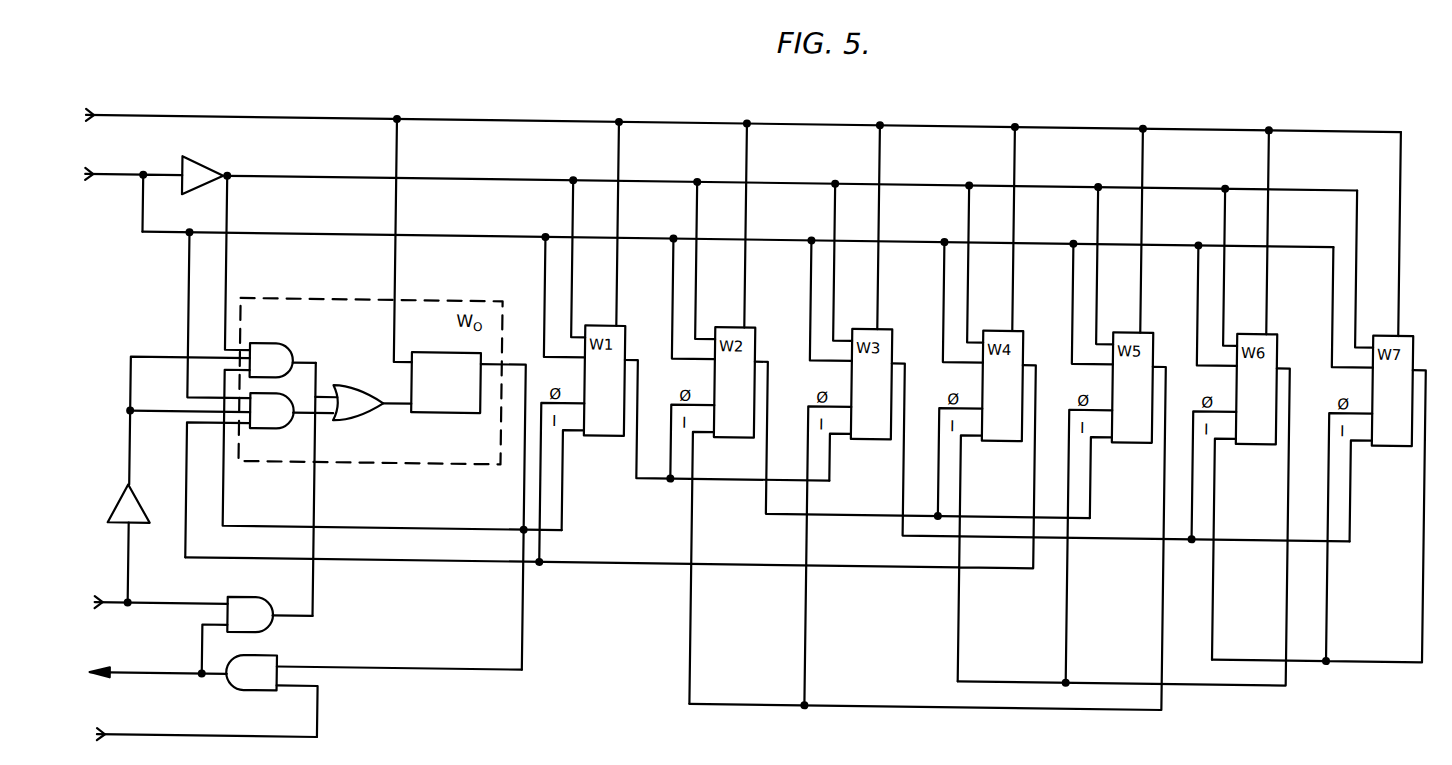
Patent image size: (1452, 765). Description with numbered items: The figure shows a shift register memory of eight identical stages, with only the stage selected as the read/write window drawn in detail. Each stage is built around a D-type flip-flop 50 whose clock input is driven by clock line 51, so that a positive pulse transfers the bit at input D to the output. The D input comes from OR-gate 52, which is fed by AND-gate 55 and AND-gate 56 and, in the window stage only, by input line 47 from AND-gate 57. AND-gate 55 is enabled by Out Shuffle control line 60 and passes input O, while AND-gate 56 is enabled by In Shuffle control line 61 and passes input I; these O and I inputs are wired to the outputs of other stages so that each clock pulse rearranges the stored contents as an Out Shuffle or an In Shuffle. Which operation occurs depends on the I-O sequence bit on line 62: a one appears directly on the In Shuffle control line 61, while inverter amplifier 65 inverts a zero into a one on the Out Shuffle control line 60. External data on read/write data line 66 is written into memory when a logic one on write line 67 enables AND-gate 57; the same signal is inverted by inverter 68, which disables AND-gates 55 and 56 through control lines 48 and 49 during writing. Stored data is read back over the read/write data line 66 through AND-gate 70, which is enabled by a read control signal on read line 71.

The input line 47 is at (320, 491).
The control line 48 is at (144, 358).
The control line 49 is at (142, 413).
The D-type flip-flop 50 is at (437, 347).
The clock line 51 is at (334, 113).
The OR-gate 52 is at (357, 416).
The AND-gate 55 is at (267, 340).
The AND-gate 56 is at (268, 427).
The AND-gate 57 is at (266, 618).
The Out Shuffle control line 60 is at (467, 174).
The In Shuffle control line 61 is at (461, 231).
The I-O sequence line 62 is at (131, 176).
The inverter amplifier 65 is at (196, 167).
The read/write data line 66 is at (170, 673).
The write line 67 is at (185, 576).
The inverter 68 is at (137, 509).
The AND-gate 70 is at (274, 681).
The read line 71 is at (198, 735).